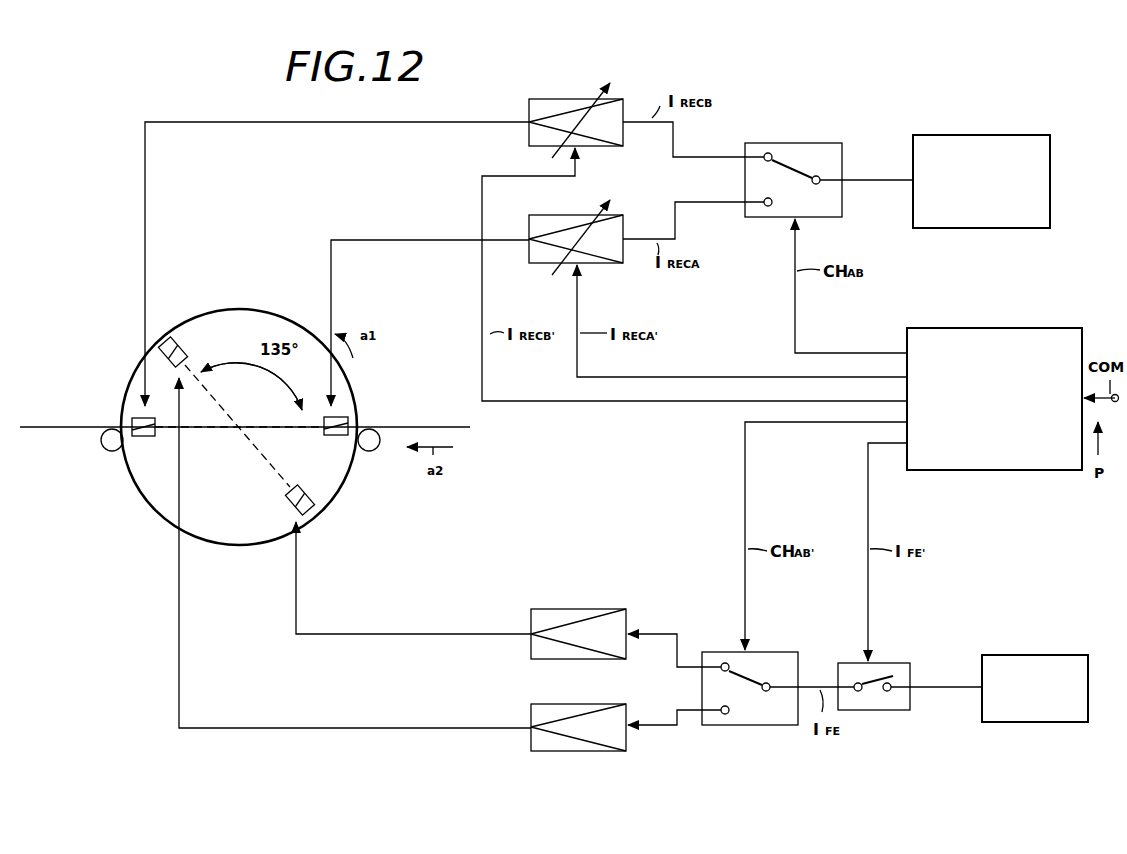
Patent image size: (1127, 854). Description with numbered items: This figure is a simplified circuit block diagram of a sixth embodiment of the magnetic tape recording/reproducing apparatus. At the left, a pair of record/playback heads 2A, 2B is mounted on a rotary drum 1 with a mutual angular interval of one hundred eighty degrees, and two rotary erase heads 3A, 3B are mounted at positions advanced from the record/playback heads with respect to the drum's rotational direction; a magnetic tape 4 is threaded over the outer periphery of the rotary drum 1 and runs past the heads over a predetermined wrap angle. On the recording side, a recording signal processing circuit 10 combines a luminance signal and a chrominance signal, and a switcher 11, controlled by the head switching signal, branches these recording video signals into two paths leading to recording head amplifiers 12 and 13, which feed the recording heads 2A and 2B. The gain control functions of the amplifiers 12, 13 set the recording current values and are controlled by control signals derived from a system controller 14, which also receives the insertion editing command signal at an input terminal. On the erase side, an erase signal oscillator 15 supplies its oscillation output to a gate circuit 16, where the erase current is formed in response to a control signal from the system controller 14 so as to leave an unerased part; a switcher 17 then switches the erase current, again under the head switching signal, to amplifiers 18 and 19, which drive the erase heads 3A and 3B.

The rotary drum 1 is at (268, 322).
The record/playback head 2A is at (345, 417).
The record/playback head 2B is at (143, 436).
The rotary erase head 3A is at (168, 342).
The rotary erase head 3B is at (290, 505).
The magnetic tape 4 is at (416, 427).
The recording signal processing circuit 10 is at (928, 135).
The switcher 11 is at (768, 143).
The recording head amplifier 12 is at (552, 215).
The recording head amplifier 13 is at (528, 104).
The system controller 14 is at (938, 328).
The erase signal oscillator 15 is at (1000, 655).
The gate circuit 16 is at (890, 663).
The switcher 17 is at (762, 652).
The amplifier 18 is at (545, 704).
The amplifier 19 is at (548, 609).